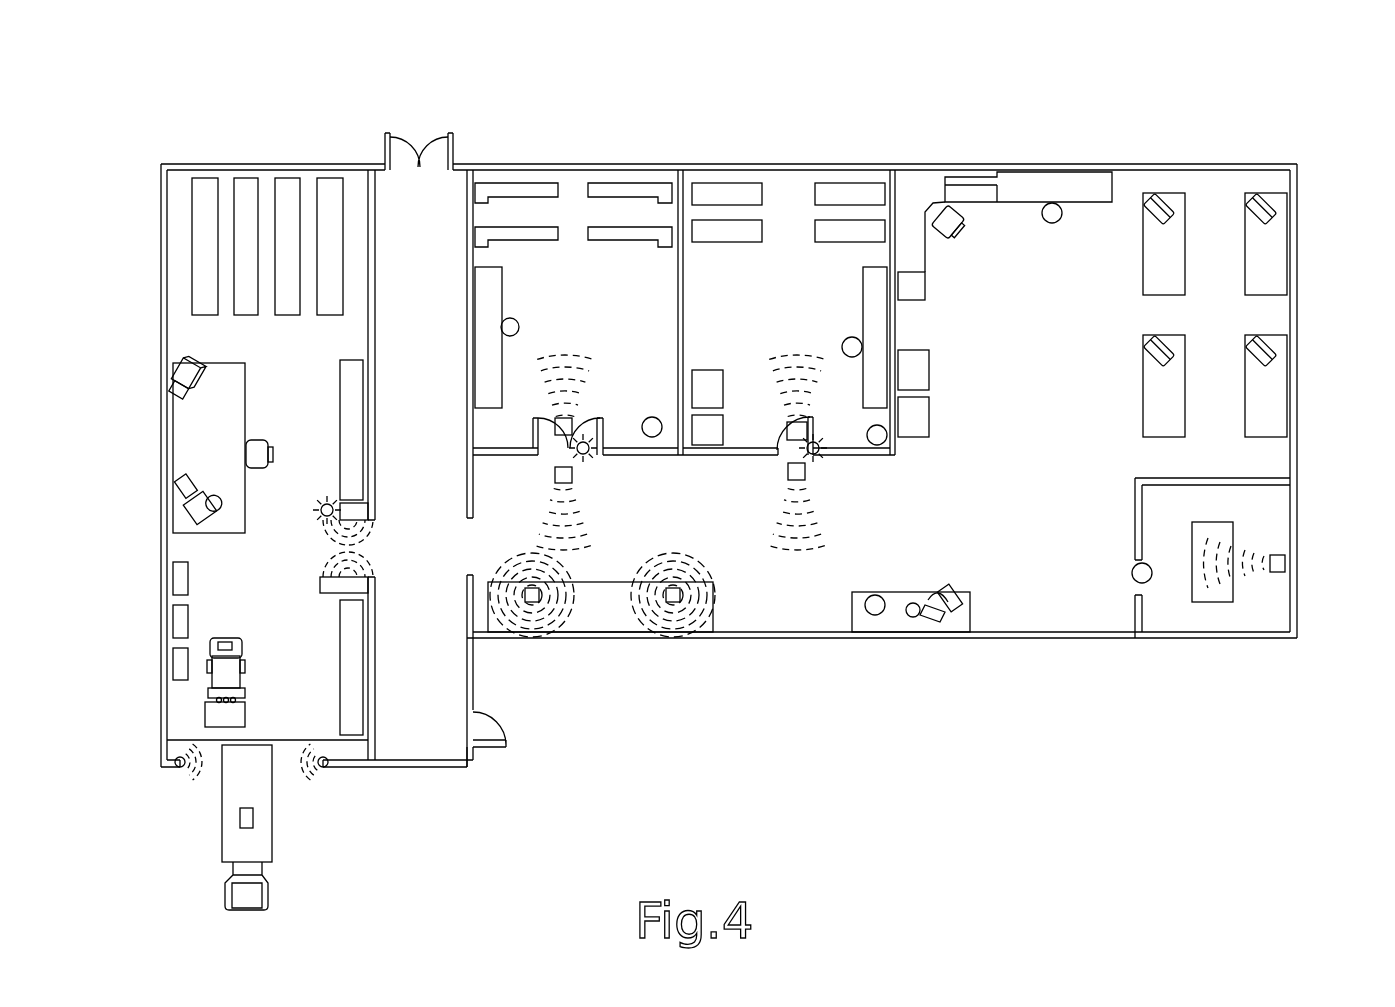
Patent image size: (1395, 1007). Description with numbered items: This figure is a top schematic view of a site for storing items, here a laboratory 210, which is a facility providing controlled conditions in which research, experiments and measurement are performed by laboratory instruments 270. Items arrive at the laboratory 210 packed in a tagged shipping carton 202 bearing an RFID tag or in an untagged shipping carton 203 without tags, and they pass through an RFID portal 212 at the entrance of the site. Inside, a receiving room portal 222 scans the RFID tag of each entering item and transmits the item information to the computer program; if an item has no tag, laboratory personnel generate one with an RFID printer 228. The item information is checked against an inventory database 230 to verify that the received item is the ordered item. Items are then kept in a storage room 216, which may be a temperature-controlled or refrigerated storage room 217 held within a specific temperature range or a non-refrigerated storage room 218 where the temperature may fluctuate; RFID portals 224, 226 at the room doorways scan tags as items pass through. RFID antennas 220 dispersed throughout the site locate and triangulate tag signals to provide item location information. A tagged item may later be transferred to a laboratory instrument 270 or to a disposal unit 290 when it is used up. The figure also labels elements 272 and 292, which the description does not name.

The laboratory 210 is at (756, 76).
The storage room 216 is at (741, 324).
The temperature-controlled or refrigerated storage room 217 is at (577, 195).
The non-temperature controlled or non-refrigerated storage room 218 is at (790, 195).
The RFID antennas 220 is at (533, 605).
The receiving room portal 222 is at (332, 597).
The RFID portal 224 is at (584, 456).
The RFID portal 226 is at (816, 456).
The RFID printer 228 is at (183, 375).
The inventory database 230 is at (188, 505).
The tagged shipping carton 202 is at (167, 733).
The untagged shipping carton 203 is at (223, 735).
The RFID portal 212 is at (326, 770).
The laboratory instruments 270 is at (1172, 293).
The bed 272 is at (1170, 200).
The disposal unit 290 is at (1253, 600).
The motor 292 is at (1130, 568).